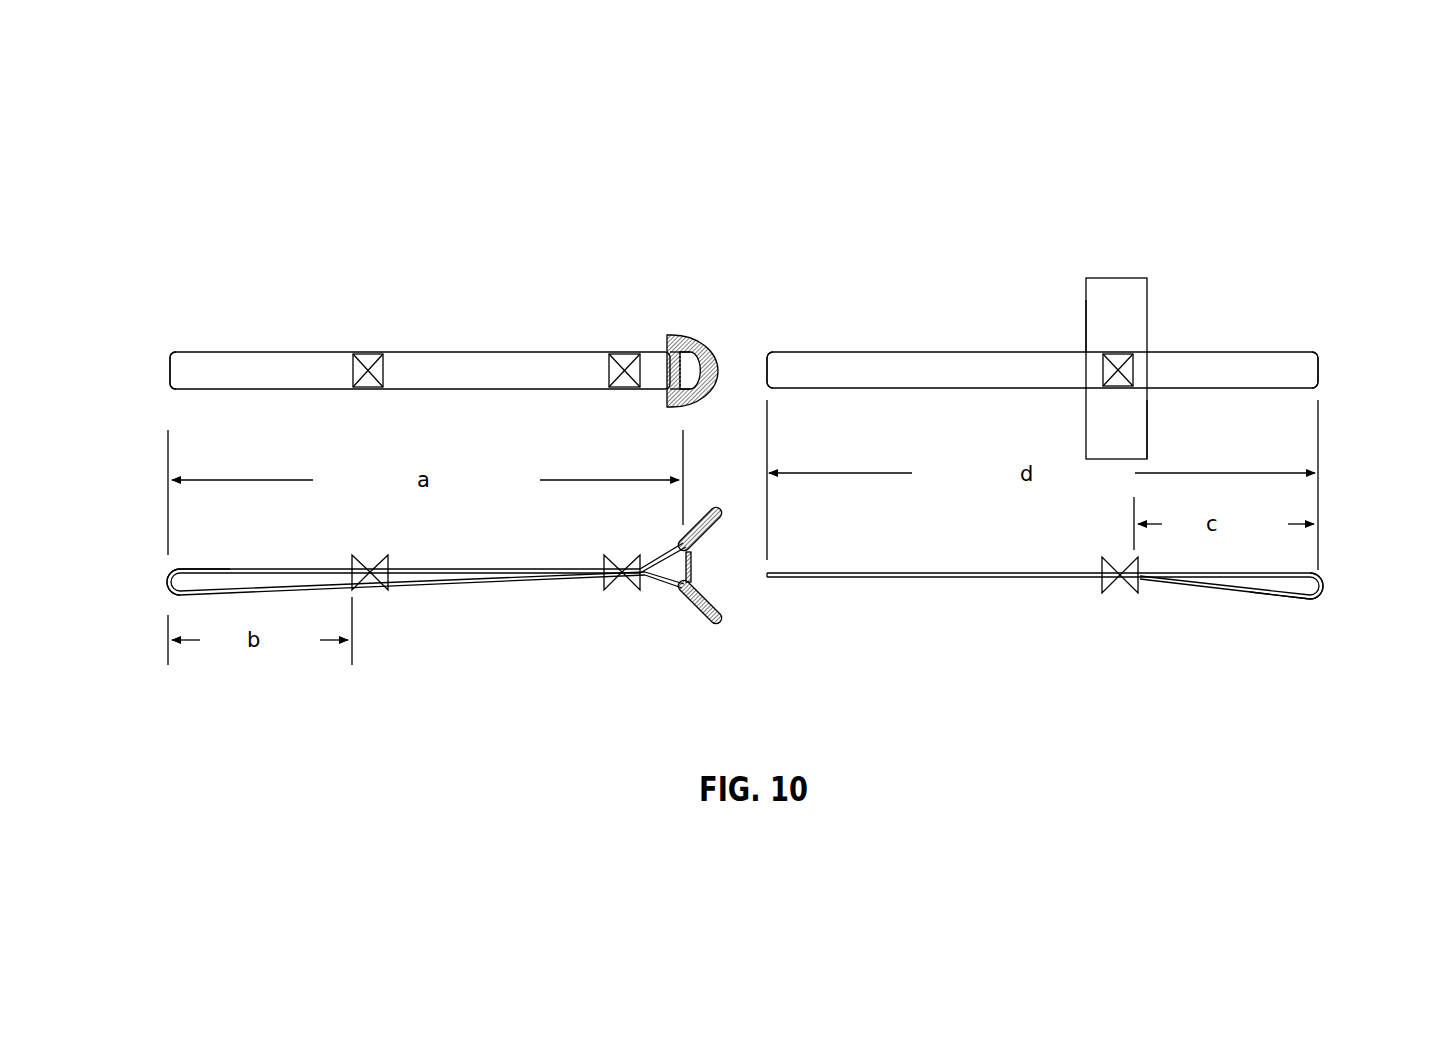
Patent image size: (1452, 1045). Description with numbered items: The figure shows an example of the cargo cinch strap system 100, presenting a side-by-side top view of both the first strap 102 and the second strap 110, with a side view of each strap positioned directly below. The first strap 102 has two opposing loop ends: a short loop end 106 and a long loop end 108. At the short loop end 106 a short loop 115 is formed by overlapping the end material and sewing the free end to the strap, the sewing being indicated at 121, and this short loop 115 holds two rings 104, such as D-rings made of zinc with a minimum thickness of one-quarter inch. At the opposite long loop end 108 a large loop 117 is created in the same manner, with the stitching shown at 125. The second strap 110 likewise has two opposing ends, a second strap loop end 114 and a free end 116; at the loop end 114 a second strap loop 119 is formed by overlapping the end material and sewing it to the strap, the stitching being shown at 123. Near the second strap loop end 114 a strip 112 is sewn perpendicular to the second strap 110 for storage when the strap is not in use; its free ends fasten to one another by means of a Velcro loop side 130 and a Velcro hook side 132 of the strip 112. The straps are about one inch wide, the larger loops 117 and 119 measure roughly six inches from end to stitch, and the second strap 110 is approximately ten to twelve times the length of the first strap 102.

The cargo cinch strap system 100 is at (193, 314).
The first strap 102 is at (518, 350).
The rings 104 is at (700, 343).
The short loop end 106 is at (688, 367).
The long loop end 108 is at (168, 360).
The second strap 110 is at (1220, 351).
The strip 112 is at (1088, 325).
The second strap loop end 114 is at (1320, 365).
The short loop 115 is at (655, 558).
The free end 116 is at (768, 370).
The large loop 117 is at (218, 568).
The second strap loop 119 is at (1260, 596).
The stitching of the short loop 121 is at (618, 583).
The stitching of the second strap loop 123 is at (1120, 575).
The stitching of the large loop 125 is at (370, 572).
The Velcro loop side 130 is at (1118, 279).
The Velcro hook side 132 is at (1148, 426).